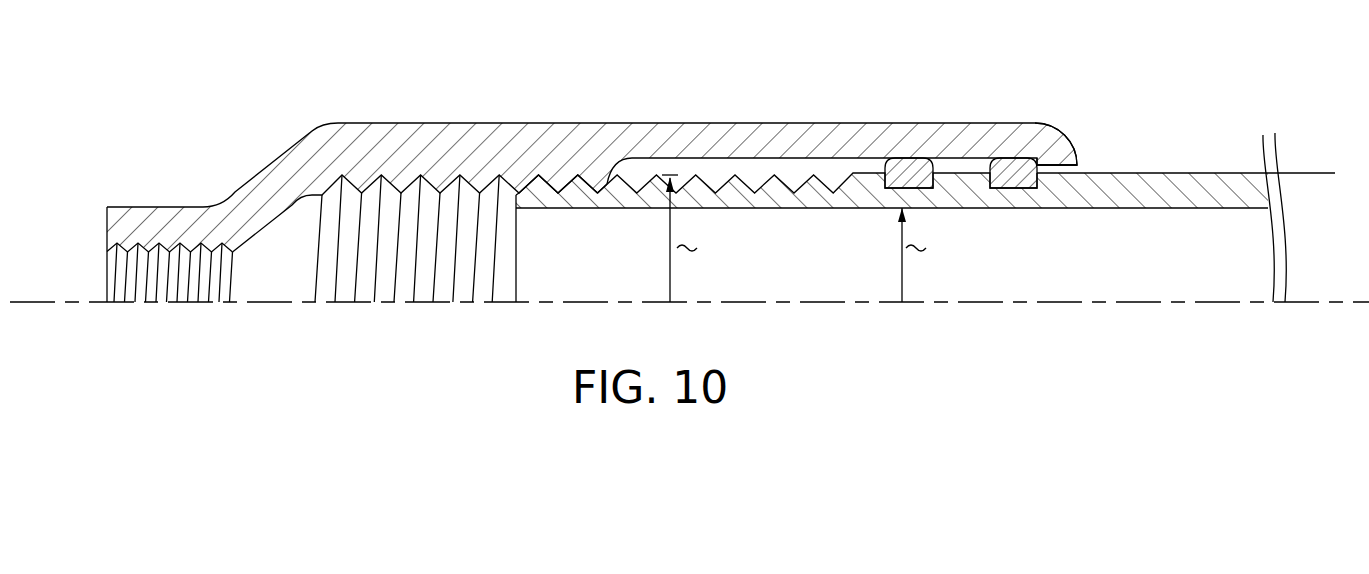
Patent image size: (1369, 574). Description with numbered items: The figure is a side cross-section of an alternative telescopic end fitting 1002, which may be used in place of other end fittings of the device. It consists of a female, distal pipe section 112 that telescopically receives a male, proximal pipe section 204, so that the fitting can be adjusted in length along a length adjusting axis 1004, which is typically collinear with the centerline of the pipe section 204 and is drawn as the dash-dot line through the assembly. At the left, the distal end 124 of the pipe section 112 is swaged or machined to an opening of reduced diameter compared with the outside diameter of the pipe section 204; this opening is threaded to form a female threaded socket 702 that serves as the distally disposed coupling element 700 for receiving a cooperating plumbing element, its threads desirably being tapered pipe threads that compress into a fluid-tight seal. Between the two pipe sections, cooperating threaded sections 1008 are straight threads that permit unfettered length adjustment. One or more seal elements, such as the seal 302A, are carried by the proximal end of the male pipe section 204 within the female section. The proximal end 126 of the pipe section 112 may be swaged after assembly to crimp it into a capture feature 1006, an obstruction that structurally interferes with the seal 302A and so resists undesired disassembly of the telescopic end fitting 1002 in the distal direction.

The coupling element 700 is at (142, 130).
The pipe section 112 is at (386, 140).
The distal end 124 is at (106, 229).
The female threaded socket 702 is at (135, 287).
The cooperating threaded sections 1008 is at (470, 212).
The telescopic end fitting 1002 is at (687, 96).
The pipe section 204 is at (1230, 190).
The seal 302A is at (1011, 163).
The capture feature 1006 is at (1062, 145).
The proximal end 126 is at (1086, 109).
The length adjusting axis 1004 is at (832, 305).